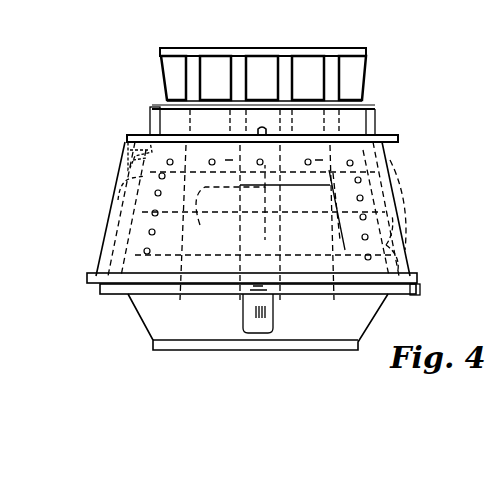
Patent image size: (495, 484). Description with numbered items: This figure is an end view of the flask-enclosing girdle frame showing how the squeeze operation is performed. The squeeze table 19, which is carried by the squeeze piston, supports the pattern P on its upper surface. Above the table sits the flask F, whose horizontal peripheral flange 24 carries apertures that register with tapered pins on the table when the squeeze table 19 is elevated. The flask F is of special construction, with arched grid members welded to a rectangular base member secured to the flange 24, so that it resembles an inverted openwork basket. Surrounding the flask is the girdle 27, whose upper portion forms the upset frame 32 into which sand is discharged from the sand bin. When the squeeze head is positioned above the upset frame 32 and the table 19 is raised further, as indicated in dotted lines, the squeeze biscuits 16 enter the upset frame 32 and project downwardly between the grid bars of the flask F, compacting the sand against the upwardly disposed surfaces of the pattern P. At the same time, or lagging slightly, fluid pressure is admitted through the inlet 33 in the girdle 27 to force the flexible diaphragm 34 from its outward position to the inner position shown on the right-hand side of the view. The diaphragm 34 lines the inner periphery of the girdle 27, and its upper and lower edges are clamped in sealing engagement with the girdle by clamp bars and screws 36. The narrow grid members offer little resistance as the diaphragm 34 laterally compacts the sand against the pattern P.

The screws 36 is at (180, 7).
The squeeze biscuits 16 is at (160, 80).
The upset frame 32 is at (378, 123).
The inlet 33 is at (125, 162).
The flask F is at (130, 180).
The flexible diaphragm 34 is at (130, 220).
The girdle 27 is at (400, 208).
The pattern P is at (385, 244).
The horizontal peripheral flange 24 is at (116, 290).
The squeeze table 19 is at (154, 316).